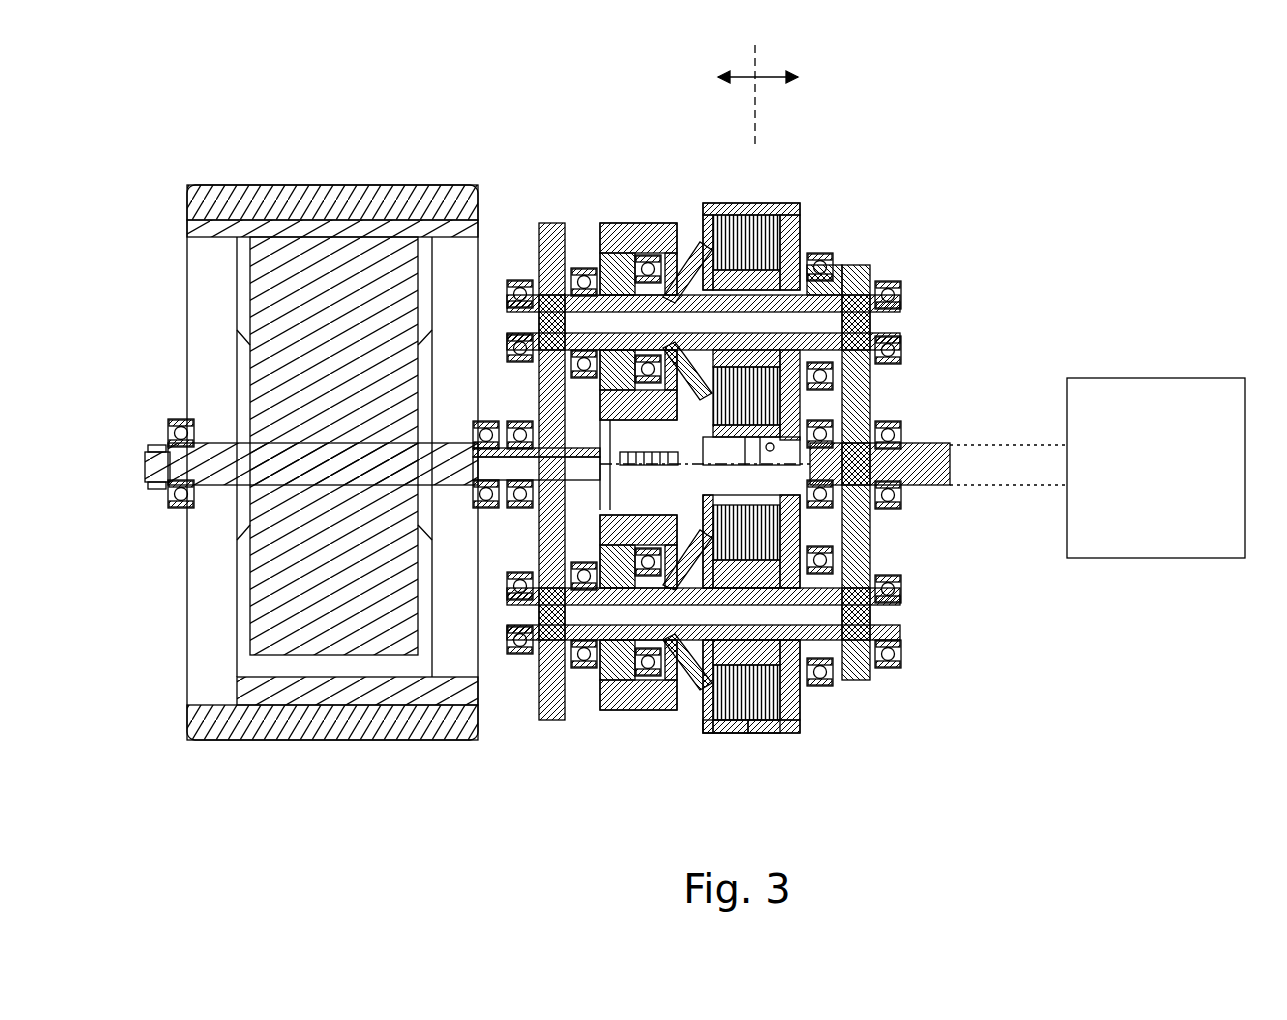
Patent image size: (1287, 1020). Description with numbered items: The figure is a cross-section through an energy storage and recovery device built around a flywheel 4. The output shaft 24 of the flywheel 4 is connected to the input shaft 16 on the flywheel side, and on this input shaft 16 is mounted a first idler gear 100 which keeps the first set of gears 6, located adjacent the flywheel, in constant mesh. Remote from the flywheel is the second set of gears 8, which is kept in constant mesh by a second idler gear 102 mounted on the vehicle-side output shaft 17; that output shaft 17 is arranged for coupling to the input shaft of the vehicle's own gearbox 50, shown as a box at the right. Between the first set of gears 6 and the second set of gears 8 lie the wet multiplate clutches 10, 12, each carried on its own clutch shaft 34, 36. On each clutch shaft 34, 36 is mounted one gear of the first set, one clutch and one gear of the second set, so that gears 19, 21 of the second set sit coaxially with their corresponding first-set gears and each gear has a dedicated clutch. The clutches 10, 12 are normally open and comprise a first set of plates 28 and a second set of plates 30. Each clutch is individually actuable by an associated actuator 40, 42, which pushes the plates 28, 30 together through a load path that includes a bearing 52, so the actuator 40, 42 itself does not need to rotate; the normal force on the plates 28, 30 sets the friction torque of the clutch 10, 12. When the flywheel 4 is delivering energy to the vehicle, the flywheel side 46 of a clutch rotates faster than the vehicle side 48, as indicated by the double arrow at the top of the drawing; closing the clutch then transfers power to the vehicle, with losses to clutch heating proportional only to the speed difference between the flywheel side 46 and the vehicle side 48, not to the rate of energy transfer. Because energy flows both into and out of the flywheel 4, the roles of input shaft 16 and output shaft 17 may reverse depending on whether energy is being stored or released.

The flywheel 4 is at (213, 733).
The first set of gears 6 is at (558, 223).
The second set of gears 8 is at (870, 268).
The wet multiplate clutch 10 is at (800, 208).
The wet multiplate clutch 12 is at (803, 718).
The input shaft 16 is at (500, 500).
The output shaft 17 is at (940, 445).
The gear 19 is at (538, 298).
The gear 21 is at (548, 636).
The output shaft of the flywheel 24 is at (455, 443).
The first set of plates 28 is at (747, 727).
The second set of plates 30 is at (767, 725).
The clutch shaft 34 is at (903, 290).
The clutch shaft 36 is at (875, 605).
The actuator 40 is at (625, 227).
The actuator 42 is at (617, 713).
The flywheel side 46 is at (740, 96).
The vehicle side 48 is at (809, 78).
The vehicle gearbox 50 is at (1162, 560).
The bearing 52 is at (672, 257).
The first idler gear 100 is at (537, 417).
The second idler gear 102 is at (885, 425).